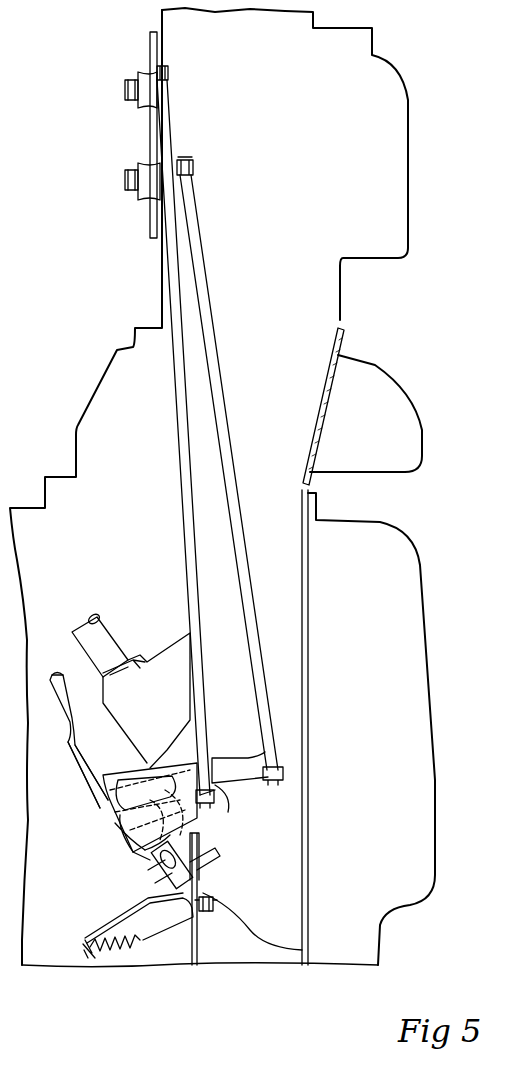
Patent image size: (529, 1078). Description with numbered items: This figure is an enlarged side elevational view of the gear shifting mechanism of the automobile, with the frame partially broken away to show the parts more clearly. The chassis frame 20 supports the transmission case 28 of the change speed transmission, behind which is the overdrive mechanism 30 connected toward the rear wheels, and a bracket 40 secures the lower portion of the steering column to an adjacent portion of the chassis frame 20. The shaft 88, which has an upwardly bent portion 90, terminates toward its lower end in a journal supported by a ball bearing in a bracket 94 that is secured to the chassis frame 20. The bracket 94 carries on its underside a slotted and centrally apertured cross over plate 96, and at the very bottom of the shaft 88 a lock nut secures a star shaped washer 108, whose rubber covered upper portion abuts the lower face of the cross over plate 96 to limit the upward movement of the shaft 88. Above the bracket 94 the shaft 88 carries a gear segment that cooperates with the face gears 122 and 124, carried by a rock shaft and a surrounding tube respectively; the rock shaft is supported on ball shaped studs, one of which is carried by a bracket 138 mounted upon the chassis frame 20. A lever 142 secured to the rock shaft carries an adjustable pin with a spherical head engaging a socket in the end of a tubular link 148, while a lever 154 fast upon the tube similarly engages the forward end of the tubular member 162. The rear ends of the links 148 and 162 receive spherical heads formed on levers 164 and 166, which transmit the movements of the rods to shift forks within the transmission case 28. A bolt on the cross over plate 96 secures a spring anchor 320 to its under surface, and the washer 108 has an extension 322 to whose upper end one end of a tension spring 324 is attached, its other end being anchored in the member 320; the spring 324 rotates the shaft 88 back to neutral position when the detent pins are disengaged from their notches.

The chassis frame 20 is at (237, 955).
The transmission case 28 is at (308, 162).
The overdrive mechanism 30 is at (162, 26).
The bracket 40 is at (162, 655).
The shaft 88 is at (62, 692).
The upwardly bent portion 90 is at (85, 770).
The bracket 94 is at (203, 870).
The cross over plate 96 is at (160, 869).
The star shaped washer 108 is at (213, 904).
The face gear 122 is at (128, 840).
The face gear 124 is at (117, 822).
The bracket 138 is at (157, 770).
The lever 142 is at (250, 772).
The tubular link 148 is at (247, 597).
The lever 154 is at (213, 787).
The tubular member 162 is at (197, 645).
The lever 164 is at (138, 165).
The lever 166 is at (142, 78).
The spring anchor 320 is at (90, 960).
The extension 322 is at (163, 933).
The tension spring 324 is at (130, 947).